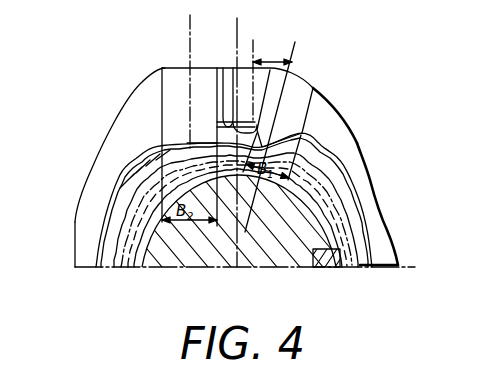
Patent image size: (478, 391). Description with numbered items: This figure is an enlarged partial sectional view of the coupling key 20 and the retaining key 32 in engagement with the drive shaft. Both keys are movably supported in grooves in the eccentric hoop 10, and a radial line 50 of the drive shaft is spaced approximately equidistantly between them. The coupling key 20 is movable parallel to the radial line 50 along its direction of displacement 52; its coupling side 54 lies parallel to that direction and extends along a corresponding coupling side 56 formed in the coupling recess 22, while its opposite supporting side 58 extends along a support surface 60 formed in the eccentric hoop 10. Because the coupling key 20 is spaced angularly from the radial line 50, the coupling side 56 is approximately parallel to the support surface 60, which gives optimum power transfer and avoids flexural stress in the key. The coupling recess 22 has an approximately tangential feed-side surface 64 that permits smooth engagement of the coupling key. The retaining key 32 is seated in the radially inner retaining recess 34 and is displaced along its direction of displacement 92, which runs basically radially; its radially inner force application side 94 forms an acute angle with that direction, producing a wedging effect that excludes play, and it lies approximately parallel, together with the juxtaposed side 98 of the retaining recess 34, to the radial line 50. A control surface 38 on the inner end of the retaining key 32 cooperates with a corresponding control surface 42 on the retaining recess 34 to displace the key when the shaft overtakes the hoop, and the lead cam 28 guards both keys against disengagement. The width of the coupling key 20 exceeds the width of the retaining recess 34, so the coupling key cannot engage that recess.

The eccentric hoop 10 is at (97, 158).
The coupling key 20 is at (170, 74).
The coupling recess 22 is at (140, 188).
The lead cam 28 is at (365, 208).
The retaining key 32 is at (308, 87).
The retaining recess 34 is at (288, 165).
The control surface 38 is at (333, 118).
The control surface 42 is at (283, 142).
The radial line 50 is at (237, 25).
The direction of displacement 52 is at (190, 23).
The coupling side 54 is at (194, 145).
The coupling side 56 is at (224, 128).
The supporting side 58 is at (162, 130).
The support surface 60 is at (158, 108).
The feed-side surface 64 is at (153, 165).
The direction of displacement 92 is at (297, 50).
The force application side 94 is at (285, 108).
The juxtaposed side 98 is at (232, 68).